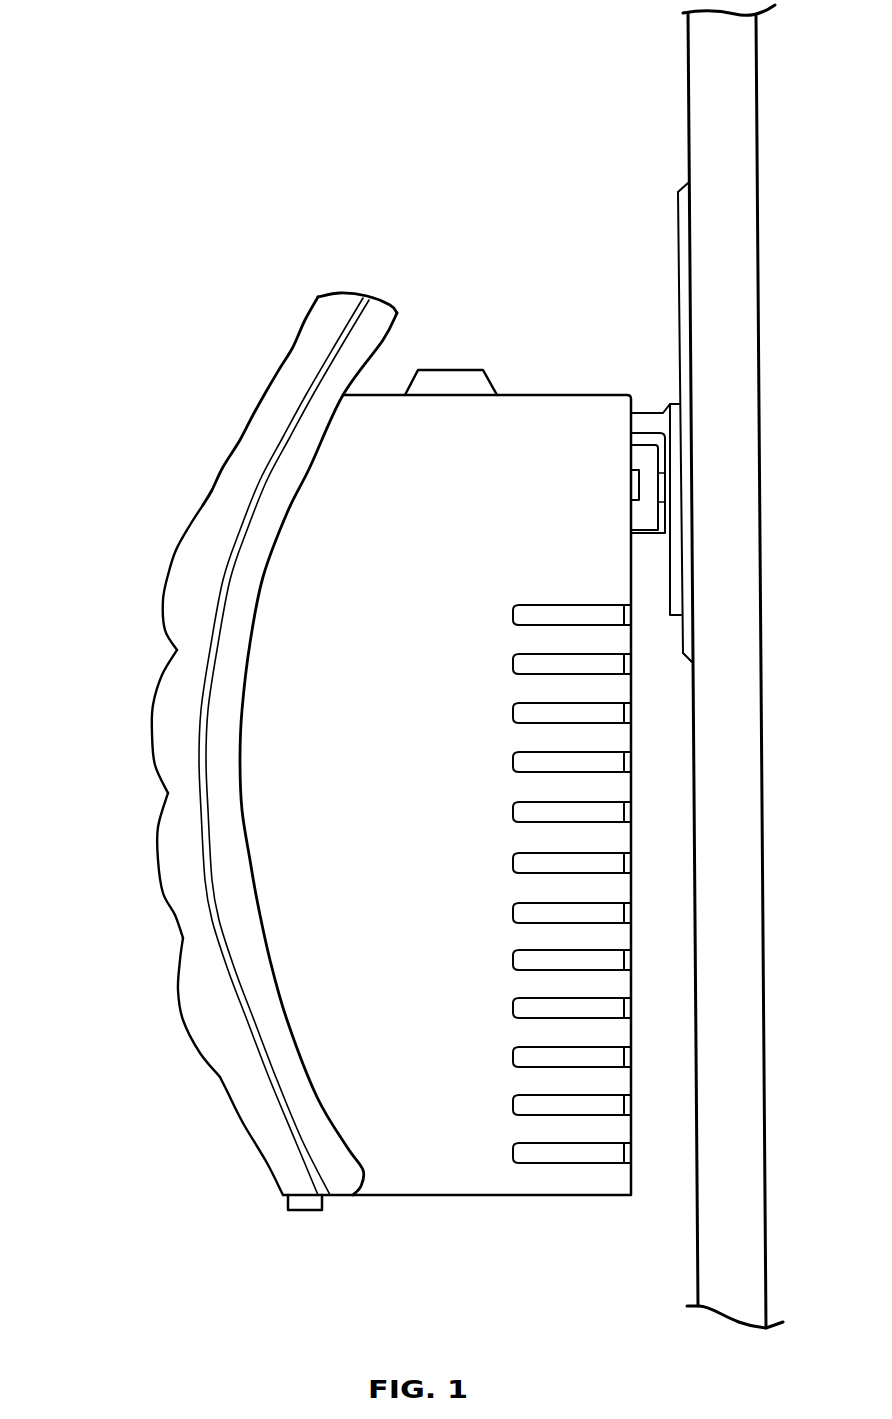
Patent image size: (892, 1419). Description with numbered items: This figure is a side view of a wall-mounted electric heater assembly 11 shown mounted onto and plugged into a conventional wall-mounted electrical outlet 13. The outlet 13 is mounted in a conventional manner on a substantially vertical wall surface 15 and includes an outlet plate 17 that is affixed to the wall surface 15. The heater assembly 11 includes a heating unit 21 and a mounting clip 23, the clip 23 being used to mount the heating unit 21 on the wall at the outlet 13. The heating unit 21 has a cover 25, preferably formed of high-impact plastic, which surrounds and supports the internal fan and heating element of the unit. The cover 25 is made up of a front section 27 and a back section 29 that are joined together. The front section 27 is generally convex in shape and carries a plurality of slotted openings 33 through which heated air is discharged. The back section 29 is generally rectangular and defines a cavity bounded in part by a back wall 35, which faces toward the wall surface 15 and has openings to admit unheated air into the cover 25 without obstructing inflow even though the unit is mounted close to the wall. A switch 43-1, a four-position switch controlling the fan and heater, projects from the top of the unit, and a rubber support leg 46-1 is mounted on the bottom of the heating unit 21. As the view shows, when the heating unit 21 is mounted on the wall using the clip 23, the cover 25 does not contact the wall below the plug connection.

The heater assembly 11 is at (398, 669).
The wall-mounted electrical outlet 13 is at (653, 422).
The wall surface 15 is at (744, 218).
The outlet plate 17 is at (678, 287).
The heating unit 21 is at (251, 780).
The mounting clip 23 is at (654, 420).
The cover 25 is at (486, 791).
The front section 27 is at (185, 915).
The back section 29 is at (447, 1178).
The slotted openings 33 is at (520, 950).
The back wall 35 is at (640, 1175).
The switch 43-1 is at (464, 378).
The rubber support leg 46-1 is at (305, 1212).